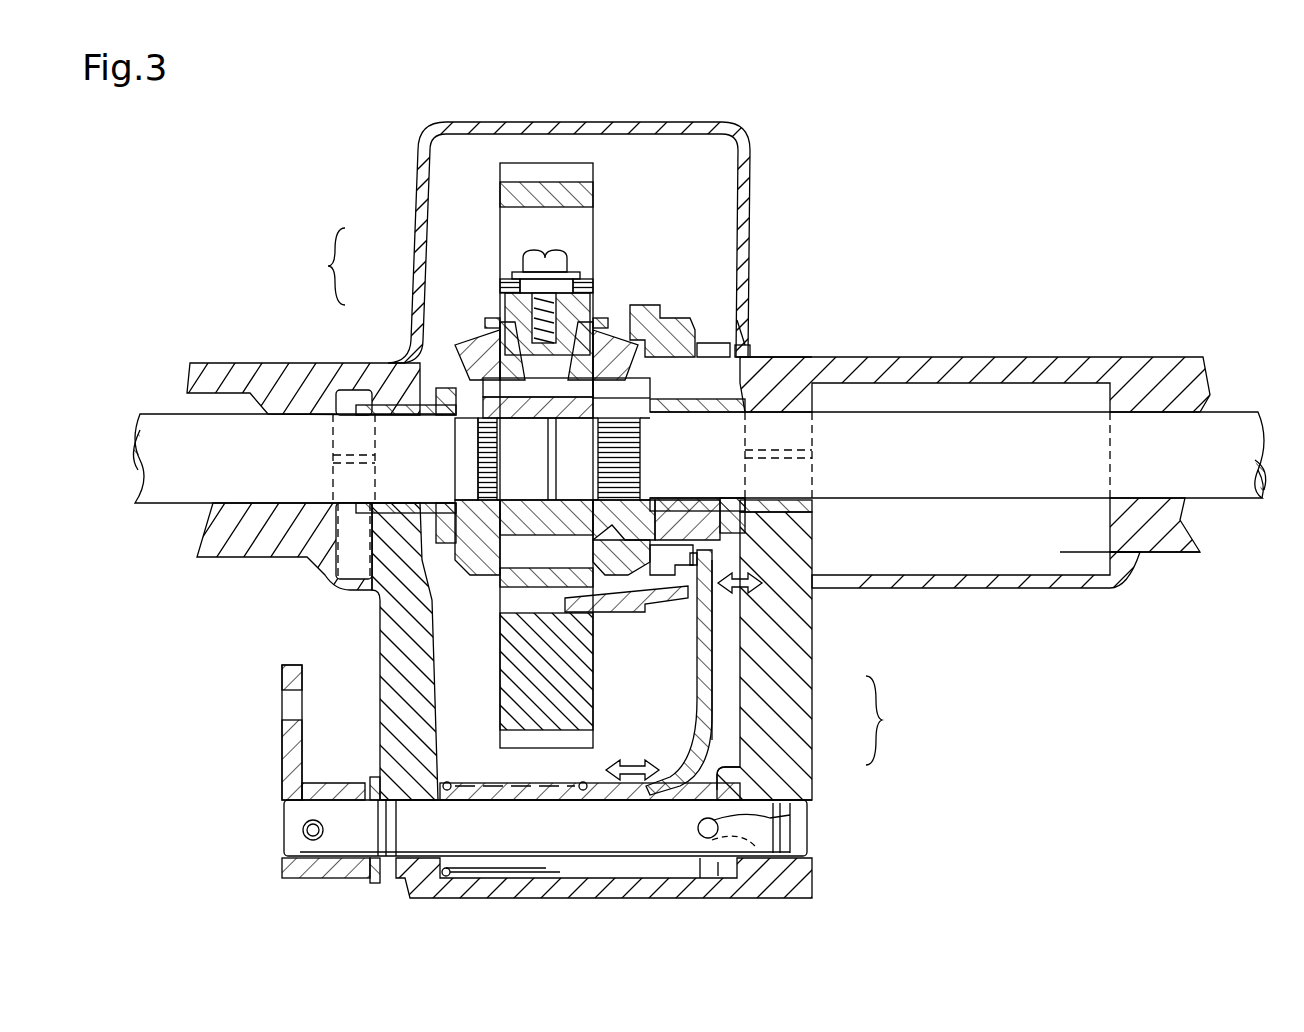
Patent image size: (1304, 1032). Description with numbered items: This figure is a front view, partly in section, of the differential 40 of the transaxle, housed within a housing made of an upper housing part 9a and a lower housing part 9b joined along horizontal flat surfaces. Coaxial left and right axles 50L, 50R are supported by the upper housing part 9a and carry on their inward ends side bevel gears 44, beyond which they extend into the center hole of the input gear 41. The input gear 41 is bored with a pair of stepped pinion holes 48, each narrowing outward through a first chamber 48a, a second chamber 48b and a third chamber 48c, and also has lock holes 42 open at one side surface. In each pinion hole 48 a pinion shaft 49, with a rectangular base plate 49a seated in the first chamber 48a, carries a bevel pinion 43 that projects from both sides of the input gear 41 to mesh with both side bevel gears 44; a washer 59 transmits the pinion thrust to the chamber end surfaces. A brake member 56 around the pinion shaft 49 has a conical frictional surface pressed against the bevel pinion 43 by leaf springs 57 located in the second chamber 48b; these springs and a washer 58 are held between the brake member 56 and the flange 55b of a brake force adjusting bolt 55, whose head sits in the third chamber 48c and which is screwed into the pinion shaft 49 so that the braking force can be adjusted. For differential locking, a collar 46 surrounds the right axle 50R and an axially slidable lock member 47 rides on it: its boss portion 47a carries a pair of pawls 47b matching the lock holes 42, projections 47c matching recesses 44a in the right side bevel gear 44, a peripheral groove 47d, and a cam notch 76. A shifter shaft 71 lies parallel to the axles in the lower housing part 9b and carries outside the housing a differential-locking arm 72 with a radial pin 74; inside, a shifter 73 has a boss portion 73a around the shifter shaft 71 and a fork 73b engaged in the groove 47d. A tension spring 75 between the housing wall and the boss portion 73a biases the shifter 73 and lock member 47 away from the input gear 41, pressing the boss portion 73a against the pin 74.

The upper housing part 9a is at (748, 168).
The lower housing part 9b is at (812, 628).
The differential 40 is at (480, 648).
The input gear 41 is at (590, 678).
The lock hole 42 is at (510, 603).
The bevel pinion 43 is at (520, 385).
The side bevel gear 44 is at (478, 570).
The recess 44a is at (660, 350).
The collar 46 is at (750, 362).
The lock member 47 is at (652, 312).
The boss portion 47a is at (742, 322).
The pawl 47b is at (592, 678).
The projection 47c is at (700, 600).
The peripheral groove 47d is at (745, 345).
The pinion hole 48 is at (324, 266).
The first chamber 48a is at (492, 320).
The second chamber 48b is at (490, 283).
The third chamber 48c is at (490, 238).
The pinion shaft 49 is at (500, 322).
The base plate 49a is at (350, 372).
The left axle 50L is at (270, 474).
The right axle 50R is at (926, 473).
The brake force adjusting bolt 55 is at (556, 252).
The flange 55b is at (578, 272).
The brake member 56 is at (598, 302).
The leaf spring 57 is at (582, 283).
The washer 58 is at (592, 290).
The washer 59 is at (490, 325).
The shifter shaft 71 is at (296, 831).
The differential-locking arm 72 is at (282, 752).
The shifter 73 is at (892, 720).
The boss portion 73a is at (726, 778).
The fork 73b is at (714, 670).
The pin 74 is at (782, 828).
The tension spring 75 is at (506, 882).
The cam notch 76 is at (760, 880).